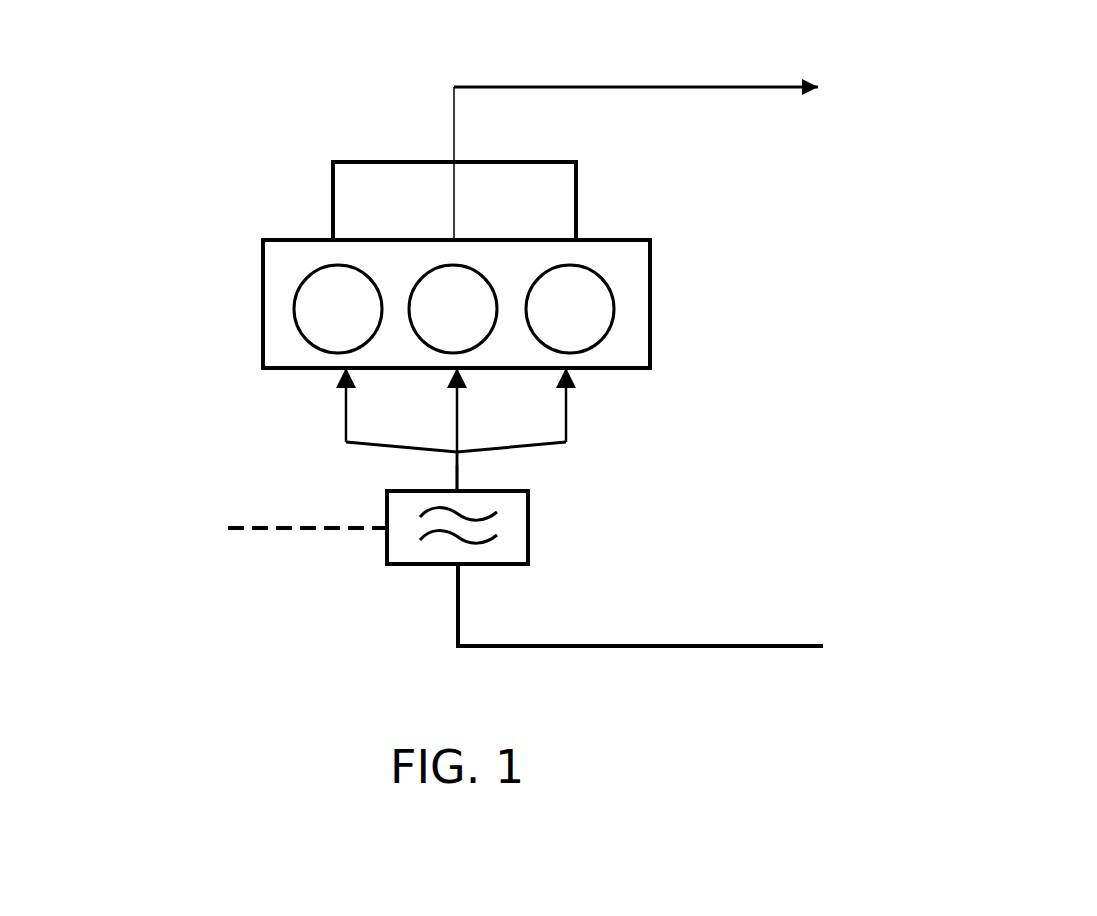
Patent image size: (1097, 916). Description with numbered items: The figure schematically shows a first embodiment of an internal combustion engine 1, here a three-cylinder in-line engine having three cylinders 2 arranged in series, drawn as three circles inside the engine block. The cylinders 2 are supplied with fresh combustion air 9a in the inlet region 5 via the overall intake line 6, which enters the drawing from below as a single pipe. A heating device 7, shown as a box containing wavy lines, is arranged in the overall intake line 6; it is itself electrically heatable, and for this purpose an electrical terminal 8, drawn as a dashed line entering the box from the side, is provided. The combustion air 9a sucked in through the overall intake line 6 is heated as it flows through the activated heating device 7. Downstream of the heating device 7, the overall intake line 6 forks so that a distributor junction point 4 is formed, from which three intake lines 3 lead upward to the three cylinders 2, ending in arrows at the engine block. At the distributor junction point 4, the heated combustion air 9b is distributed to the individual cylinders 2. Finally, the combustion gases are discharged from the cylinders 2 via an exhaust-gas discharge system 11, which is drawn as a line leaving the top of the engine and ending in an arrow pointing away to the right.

The internal combustion engine 1 is at (258, 133).
The cylinders 2 is at (458, 300).
The intake lines 3 is at (453, 415).
The distributor junction point 4 is at (460, 453).
The inlet region 5 is at (182, 495).
The overall intake line 6 is at (463, 475).
The heating device 7 is at (513, 540).
The electrical terminal 8 is at (298, 530).
The combustion air 9a is at (430, 605).
The heated combustion air 9b is at (443, 478).
The exhaust-gas discharge system 11 is at (440, 60).